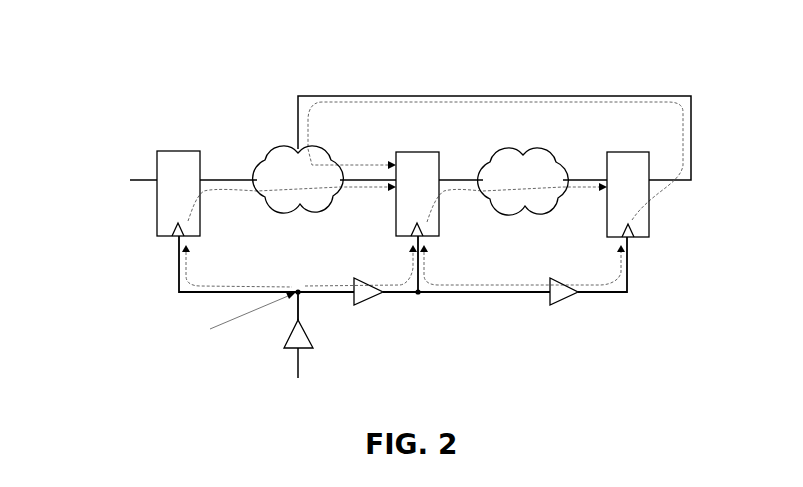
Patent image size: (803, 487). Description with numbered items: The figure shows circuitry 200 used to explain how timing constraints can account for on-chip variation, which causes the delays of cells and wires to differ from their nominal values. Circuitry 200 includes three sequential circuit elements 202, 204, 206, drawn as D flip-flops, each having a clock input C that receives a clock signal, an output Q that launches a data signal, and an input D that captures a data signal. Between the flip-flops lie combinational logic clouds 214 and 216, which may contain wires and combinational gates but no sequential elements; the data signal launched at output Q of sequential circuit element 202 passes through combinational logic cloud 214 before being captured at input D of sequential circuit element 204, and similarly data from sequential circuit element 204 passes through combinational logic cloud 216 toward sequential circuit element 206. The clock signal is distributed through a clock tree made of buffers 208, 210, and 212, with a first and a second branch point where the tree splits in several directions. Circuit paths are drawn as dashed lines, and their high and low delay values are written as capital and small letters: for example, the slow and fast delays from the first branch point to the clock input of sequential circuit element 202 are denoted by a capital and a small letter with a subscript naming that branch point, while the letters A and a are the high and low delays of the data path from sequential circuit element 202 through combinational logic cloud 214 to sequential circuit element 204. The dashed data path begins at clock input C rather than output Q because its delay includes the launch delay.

The circuitry 200 is at (201, 82).
The sequential circuit element 202 is at (178, 182).
The sequential circuit element 204 is at (417, 183).
The sequential circuit element 206 is at (628, 184).
The buffer 208 is at (280, 349).
The buffer 210 is at (368, 305).
The buffer 212 is at (565, 305).
The combinational logic cloud 214 is at (270, 161).
The combinational logic cloud 216 is at (523, 172).